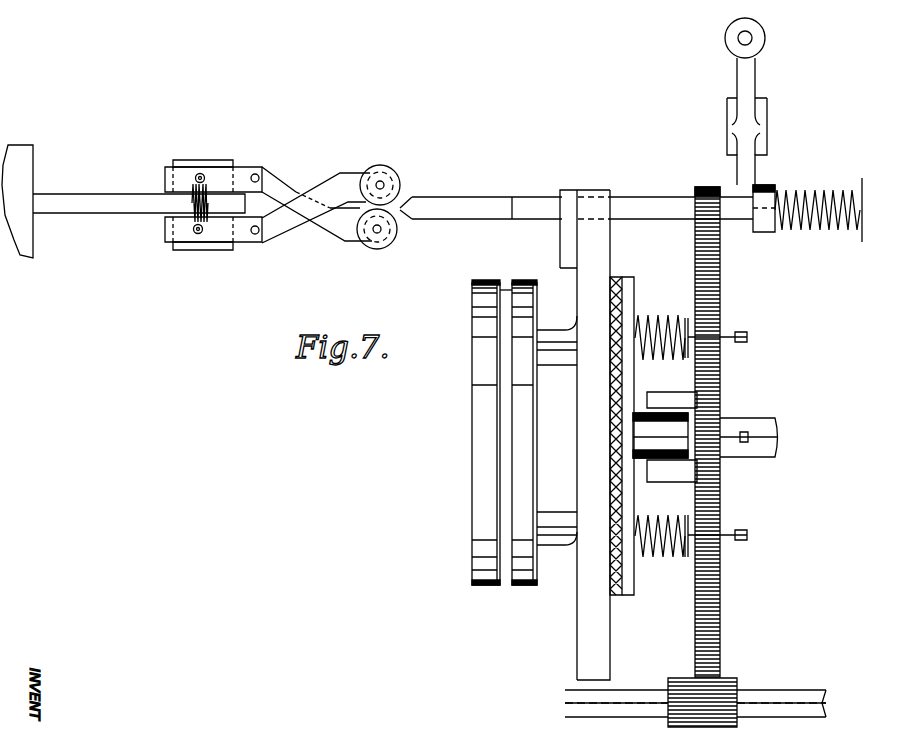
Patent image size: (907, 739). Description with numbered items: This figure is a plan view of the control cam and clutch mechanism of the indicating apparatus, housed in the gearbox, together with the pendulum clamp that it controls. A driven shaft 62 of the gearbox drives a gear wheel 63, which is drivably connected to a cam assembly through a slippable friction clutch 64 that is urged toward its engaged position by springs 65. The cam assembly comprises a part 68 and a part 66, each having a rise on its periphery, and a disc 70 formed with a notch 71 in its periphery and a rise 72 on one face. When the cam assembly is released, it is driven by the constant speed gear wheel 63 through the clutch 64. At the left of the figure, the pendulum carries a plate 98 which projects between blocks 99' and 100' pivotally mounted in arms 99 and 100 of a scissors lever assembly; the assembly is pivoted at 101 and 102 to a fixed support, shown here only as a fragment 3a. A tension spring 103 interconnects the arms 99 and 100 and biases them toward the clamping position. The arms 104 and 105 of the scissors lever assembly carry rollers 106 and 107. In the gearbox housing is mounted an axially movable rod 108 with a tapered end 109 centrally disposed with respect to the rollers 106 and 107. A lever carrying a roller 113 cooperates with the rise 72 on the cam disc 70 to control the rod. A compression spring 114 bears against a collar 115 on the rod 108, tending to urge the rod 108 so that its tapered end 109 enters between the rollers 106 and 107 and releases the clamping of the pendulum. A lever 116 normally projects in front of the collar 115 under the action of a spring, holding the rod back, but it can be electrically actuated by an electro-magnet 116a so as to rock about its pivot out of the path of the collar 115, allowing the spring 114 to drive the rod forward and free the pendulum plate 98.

The frame wall 3a is at (28, 190).
The plate 98 is at (146, 210).
The arm 99 is at (213, 156).
The block 99' is at (202, 143).
The arm 100 is at (213, 257).
The block 100' is at (196, 270).
The pivot 101 is at (265, 176).
The pivot 102 is at (258, 244).
The tension spring 103 is at (175, 221).
The arm 104 is at (347, 176).
The arm 105 is at (346, 240).
The roller 106 is at (392, 160).
The roller 107 is at (376, 250).
The axially movable rod 108 is at (477, 200).
The tapered end 109 is at (406, 203).
The roller 113 is at (528, 204).
The rise 72 is at (560, 250).
The disc 70 is at (577, 656).
The notch 71 is at (588, 470).
The slippable friction clutch 64 is at (608, 588).
The cam part 66 is at (478, 451).
The cam part 68 is at (512, 485).
The springs 65 is at (652, 320).
The gear wheel 63 is at (720, 602).
The driven shaft 62 is at (775, 696).
The electro-magnet 116a is at (765, 38).
The lever 116 is at (747, 86).
The collar 115 is at (768, 185).
The compression spring 114 is at (800, 228).